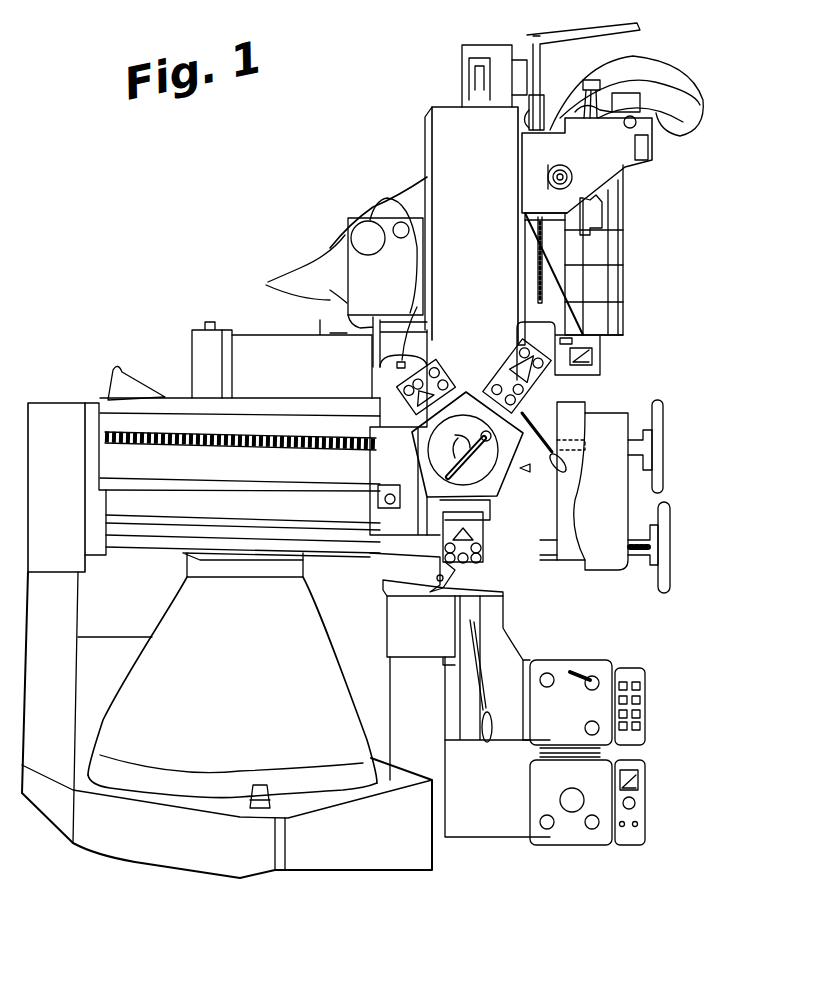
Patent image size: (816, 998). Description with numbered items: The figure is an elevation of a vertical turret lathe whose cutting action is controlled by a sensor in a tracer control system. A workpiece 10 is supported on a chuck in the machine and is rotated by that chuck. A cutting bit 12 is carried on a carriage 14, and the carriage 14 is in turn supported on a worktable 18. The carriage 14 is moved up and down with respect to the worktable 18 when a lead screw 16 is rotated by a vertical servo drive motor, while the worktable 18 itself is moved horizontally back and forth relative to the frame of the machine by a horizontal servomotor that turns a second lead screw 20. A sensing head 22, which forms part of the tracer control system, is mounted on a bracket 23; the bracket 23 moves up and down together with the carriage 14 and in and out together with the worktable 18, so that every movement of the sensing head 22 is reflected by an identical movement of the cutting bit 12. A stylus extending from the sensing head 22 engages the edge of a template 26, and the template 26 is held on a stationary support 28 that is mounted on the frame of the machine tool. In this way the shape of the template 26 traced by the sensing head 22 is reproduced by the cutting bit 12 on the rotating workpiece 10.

The workpiece 10 is at (227, 715).
The cutting bit 12 is at (425, 577).
The carriage 14 is at (466, 437).
The lead screw 16 is at (295, 535).
The worktable 18 is at (401, 472).
The lead screw 20 is at (318, 446).
The sensing head 22 is at (625, 98).
The bracket 23 is at (604, 164).
The template 26 is at (565, 320).
The stationary support 28 is at (602, 250).